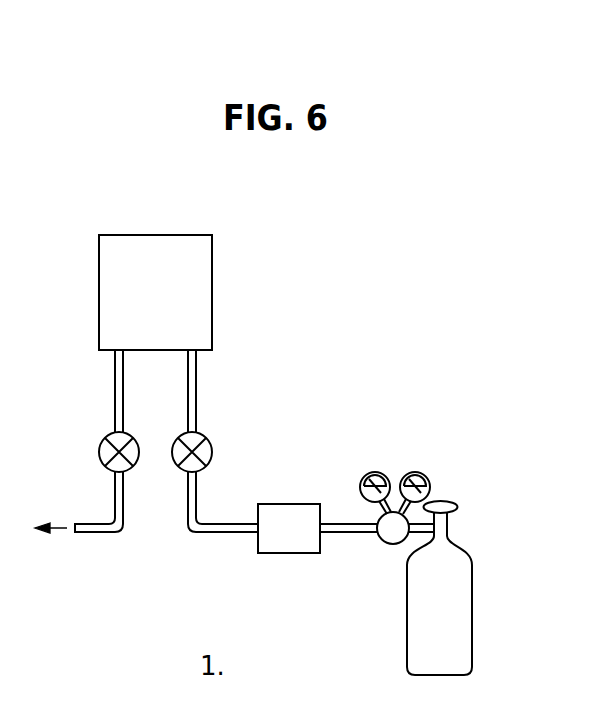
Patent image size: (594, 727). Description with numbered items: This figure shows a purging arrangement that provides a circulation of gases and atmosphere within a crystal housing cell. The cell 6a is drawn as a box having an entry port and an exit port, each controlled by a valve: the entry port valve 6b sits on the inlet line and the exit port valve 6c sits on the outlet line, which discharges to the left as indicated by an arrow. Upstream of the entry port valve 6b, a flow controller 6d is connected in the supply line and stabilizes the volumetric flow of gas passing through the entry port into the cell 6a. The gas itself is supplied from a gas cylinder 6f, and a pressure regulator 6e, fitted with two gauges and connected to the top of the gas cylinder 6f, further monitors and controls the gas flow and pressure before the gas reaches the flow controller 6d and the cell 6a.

The cell 6a is at (122, 247).
The entry port valve 6b is at (212, 440).
The exit port valve 6c is at (100, 444).
The flow controller 6d is at (297, 512).
The pressure regulator 6e is at (418, 475).
The gas cylinder 6f is at (462, 574).